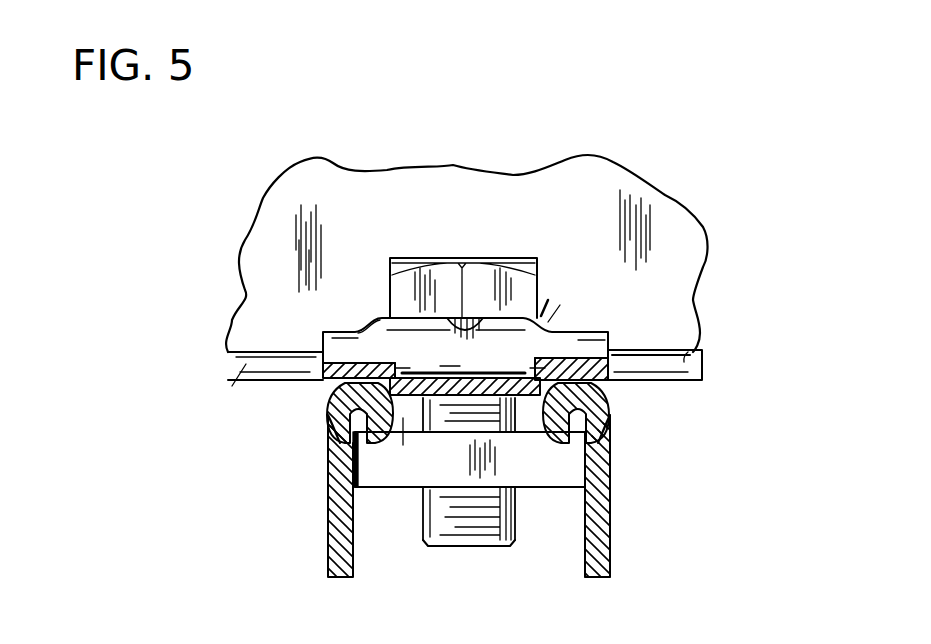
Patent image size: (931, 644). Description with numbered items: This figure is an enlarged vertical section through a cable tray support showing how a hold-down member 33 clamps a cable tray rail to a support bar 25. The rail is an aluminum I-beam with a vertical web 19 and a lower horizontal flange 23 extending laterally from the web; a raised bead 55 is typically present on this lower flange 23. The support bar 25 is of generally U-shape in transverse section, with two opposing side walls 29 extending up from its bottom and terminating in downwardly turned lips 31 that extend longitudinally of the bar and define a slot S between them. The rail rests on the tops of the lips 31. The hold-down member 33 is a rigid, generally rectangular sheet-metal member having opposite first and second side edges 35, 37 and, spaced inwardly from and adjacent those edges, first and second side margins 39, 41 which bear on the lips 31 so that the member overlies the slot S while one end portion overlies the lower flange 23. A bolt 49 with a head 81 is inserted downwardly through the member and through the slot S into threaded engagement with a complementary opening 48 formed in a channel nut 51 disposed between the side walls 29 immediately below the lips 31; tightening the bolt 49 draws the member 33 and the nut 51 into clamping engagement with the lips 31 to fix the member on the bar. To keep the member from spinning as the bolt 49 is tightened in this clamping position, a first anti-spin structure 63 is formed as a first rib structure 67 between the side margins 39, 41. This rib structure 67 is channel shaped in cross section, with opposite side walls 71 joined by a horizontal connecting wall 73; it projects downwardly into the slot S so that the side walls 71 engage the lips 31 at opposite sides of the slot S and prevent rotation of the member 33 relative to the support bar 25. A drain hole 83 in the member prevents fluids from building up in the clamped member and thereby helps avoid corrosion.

The vertical web 19 is at (673, 243).
The lower horizontal flange 23 is at (232, 386).
The support bar 25 is at (610, 562).
The side walls 29 is at (330, 540).
The downwardly turned lips 31 is at (355, 433).
The hold-down member 33 is at (548, 300).
The first side edge 35 is at (322, 342).
The second side edge 37 is at (612, 350).
The first side margin 39 is at (365, 322).
The second side margin 41 is at (560, 305).
The complementary opening 48 is at (518, 492).
The bolt 49 is at (500, 548).
The channel nut 51 is at (393, 465).
The bead 55 is at (688, 352).
The first anti-spin structure 63 is at (560, 330).
The first rib structure 67 is at (407, 445).
The side walls 71 is at (405, 353).
The horizontal connecting wall 73 is at (455, 350).
The head 81 is at (461, 258).
The drain hole 83 is at (481, 325).
The slot S is at (357, 456).